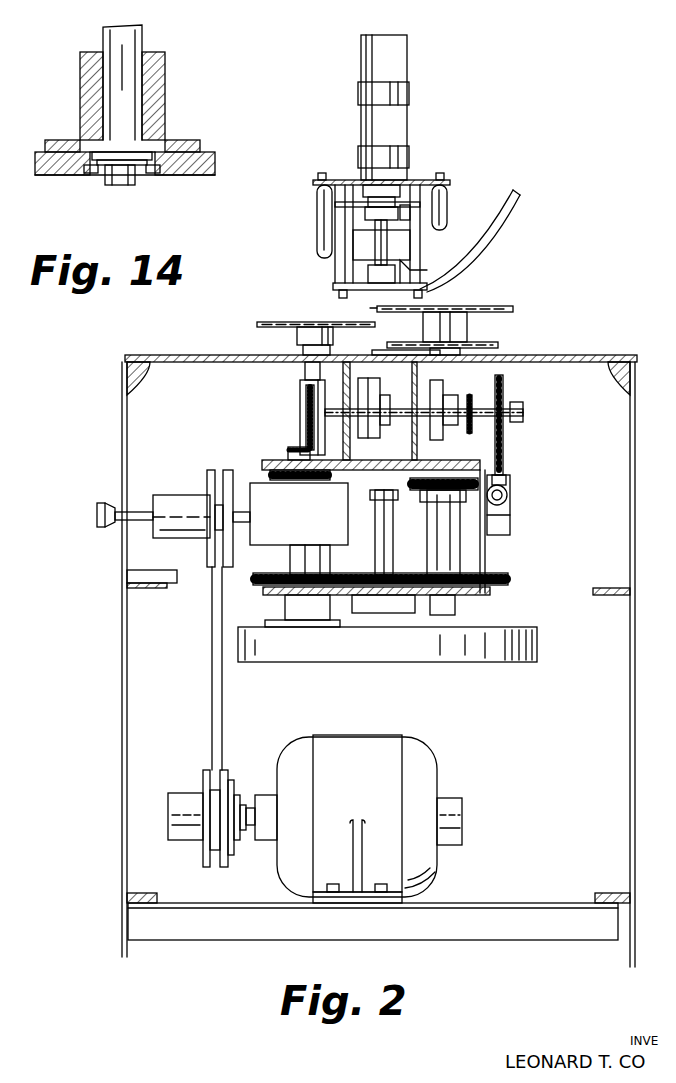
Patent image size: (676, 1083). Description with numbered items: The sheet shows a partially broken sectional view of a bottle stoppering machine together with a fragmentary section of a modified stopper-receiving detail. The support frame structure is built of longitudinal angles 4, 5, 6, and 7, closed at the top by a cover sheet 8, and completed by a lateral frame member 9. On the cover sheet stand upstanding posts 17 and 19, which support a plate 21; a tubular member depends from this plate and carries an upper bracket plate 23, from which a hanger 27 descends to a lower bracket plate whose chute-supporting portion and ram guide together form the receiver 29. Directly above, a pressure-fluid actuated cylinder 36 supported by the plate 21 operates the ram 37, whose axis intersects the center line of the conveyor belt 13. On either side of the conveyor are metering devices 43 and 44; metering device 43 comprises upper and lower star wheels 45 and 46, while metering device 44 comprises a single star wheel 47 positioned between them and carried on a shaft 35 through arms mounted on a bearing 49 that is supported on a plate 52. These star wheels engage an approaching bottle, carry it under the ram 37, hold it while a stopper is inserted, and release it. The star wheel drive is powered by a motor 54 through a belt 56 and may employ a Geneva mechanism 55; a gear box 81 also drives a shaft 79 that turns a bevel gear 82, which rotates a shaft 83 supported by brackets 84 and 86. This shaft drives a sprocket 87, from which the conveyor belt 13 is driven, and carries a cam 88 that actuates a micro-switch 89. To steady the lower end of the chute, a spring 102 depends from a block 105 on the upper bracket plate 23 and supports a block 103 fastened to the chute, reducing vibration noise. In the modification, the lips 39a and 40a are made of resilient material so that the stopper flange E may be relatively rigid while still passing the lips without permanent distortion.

In FIG. 14, the stopper flange E is at (118, 165).
In FIG. 14, the lip 39a is at (97, 175).
In FIG. 14, the lip 40a is at (145, 177).
In FIG. 2, the longitudinal angle 4 is at (628, 372).
In FIG. 2, the longitudinal angle 5 is at (133, 372).
In FIG. 2, the longitudinal angle 6 is at (130, 590).
In FIG. 2, the longitudinal angle 7 is at (630, 600).
In FIG. 2, the cover sheet 8 is at (212, 355).
In FIG. 2, the lateral frame member 9 is at (218, 928).
In FIG. 2, the conveyor belt 13 is at (370, 352).
In FIG. 2, the upstanding post 17 is at (320, 208).
In FIG. 2, the upstanding post 19 is at (447, 205).
In FIG. 2, the plate 21 is at (343, 205).
In FIG. 2, the upper bracket plate 23 is at (357, 200).
In FIG. 2, the hanger 27 is at (340, 247).
In FIG. 2, the receiver 29 is at (350, 271).
In FIG. 2, the shaft 35 is at (302, 352).
In FIG. 2, the cylinder 36 is at (390, 127).
In FIG. 2, the ram 37 is at (377, 247).
In FIG. 2, the metering device 43 is at (483, 304).
In FIG. 2, the metering device 44 is at (288, 320).
In FIG. 2, the upper star wheel 45 is at (513, 310).
In FIG. 2, the lower star wheel 46 is at (493, 342).
In FIG. 2, the star wheel 47 is at (332, 325).
In FIG. 2, the bearing 49 is at (302, 403).
In FIG. 2, the plate 52 is at (273, 458).
In FIG. 2, the motor 54 is at (430, 760).
In FIG. 2, the Geneva mechanism 55 is at (422, 650).
In FIG. 2, the belt 56 is at (214, 700).
In FIG. 2, the shaft 79 is at (290, 472).
In FIG. 2, the gear box 81 is at (299, 529).
In FIG. 2, the bevel gear 82 is at (307, 415).
In FIG. 2, the shaft 83 is at (397, 418).
In FIG. 2, the bracket 84 is at (358, 352).
In FIG. 2, the bracket 86 is at (413, 365).
In FIG. 2, the sprocket 87 is at (469, 396).
In FIG. 2, the cam 88 is at (505, 440).
In FIG. 2, the micro-switch 89 is at (510, 508).
In FIG. 2, the spring 102 is at (421, 245).
In FIG. 2, the block 103 is at (413, 278).
In FIG. 2, the block 105 is at (405, 208).